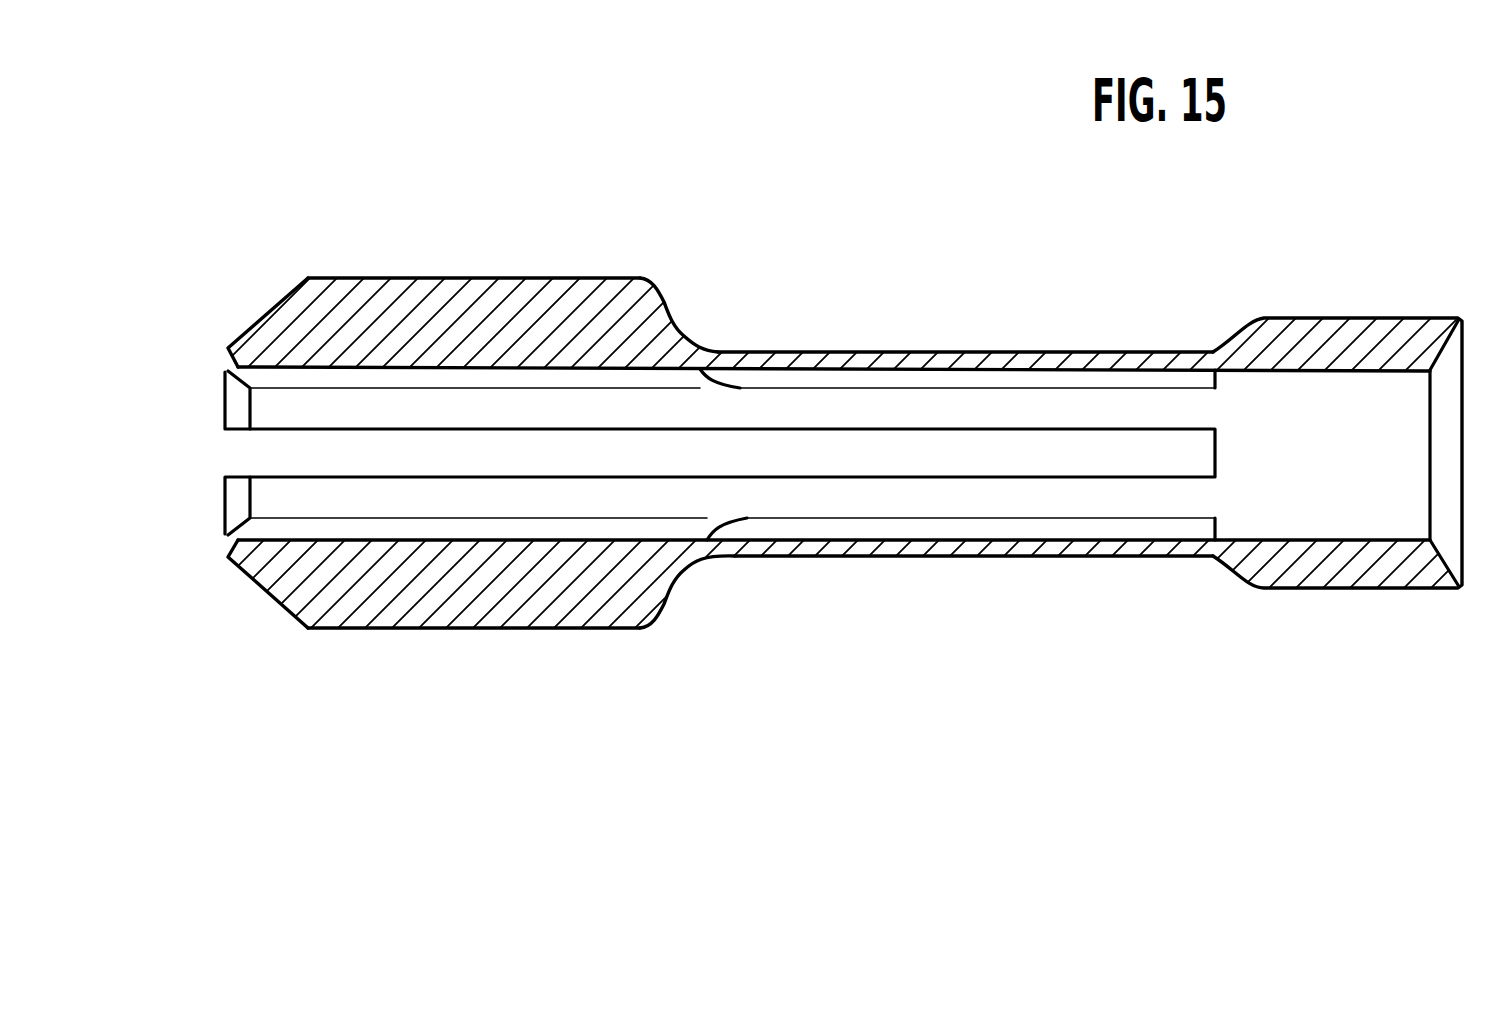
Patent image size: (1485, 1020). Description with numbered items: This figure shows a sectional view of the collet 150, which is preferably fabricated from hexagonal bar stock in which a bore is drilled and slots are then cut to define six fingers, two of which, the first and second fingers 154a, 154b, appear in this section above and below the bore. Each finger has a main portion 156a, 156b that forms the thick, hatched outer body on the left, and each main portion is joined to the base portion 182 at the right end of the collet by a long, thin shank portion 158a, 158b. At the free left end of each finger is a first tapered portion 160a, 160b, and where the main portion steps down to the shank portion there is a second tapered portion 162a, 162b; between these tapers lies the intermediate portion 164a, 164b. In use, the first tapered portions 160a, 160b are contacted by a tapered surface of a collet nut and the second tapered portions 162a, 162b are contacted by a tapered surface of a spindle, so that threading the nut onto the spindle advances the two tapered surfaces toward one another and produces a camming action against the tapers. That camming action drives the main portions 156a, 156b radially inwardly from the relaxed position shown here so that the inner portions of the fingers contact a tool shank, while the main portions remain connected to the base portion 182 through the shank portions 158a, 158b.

The collet 150 is at (840, 238).
The first finger 154a is at (590, 284).
The second finger 154b is at (477, 630).
The main portion 156a is at (378, 284).
The main portion 156b is at (348, 630).
The shank portion 158a is at (910, 350).
The shank portion 158b is at (1008, 558).
The first tapered portion 160a is at (242, 334).
The first tapered portion 160b is at (275, 602).
The second tapered portion 162a is at (668, 293).
The second tapered portion 162b is at (680, 605).
The intermediate portion 164a is at (497, 286).
The intermediate portion 164b is at (593, 630).
The base portion 182 is at (1347, 317).